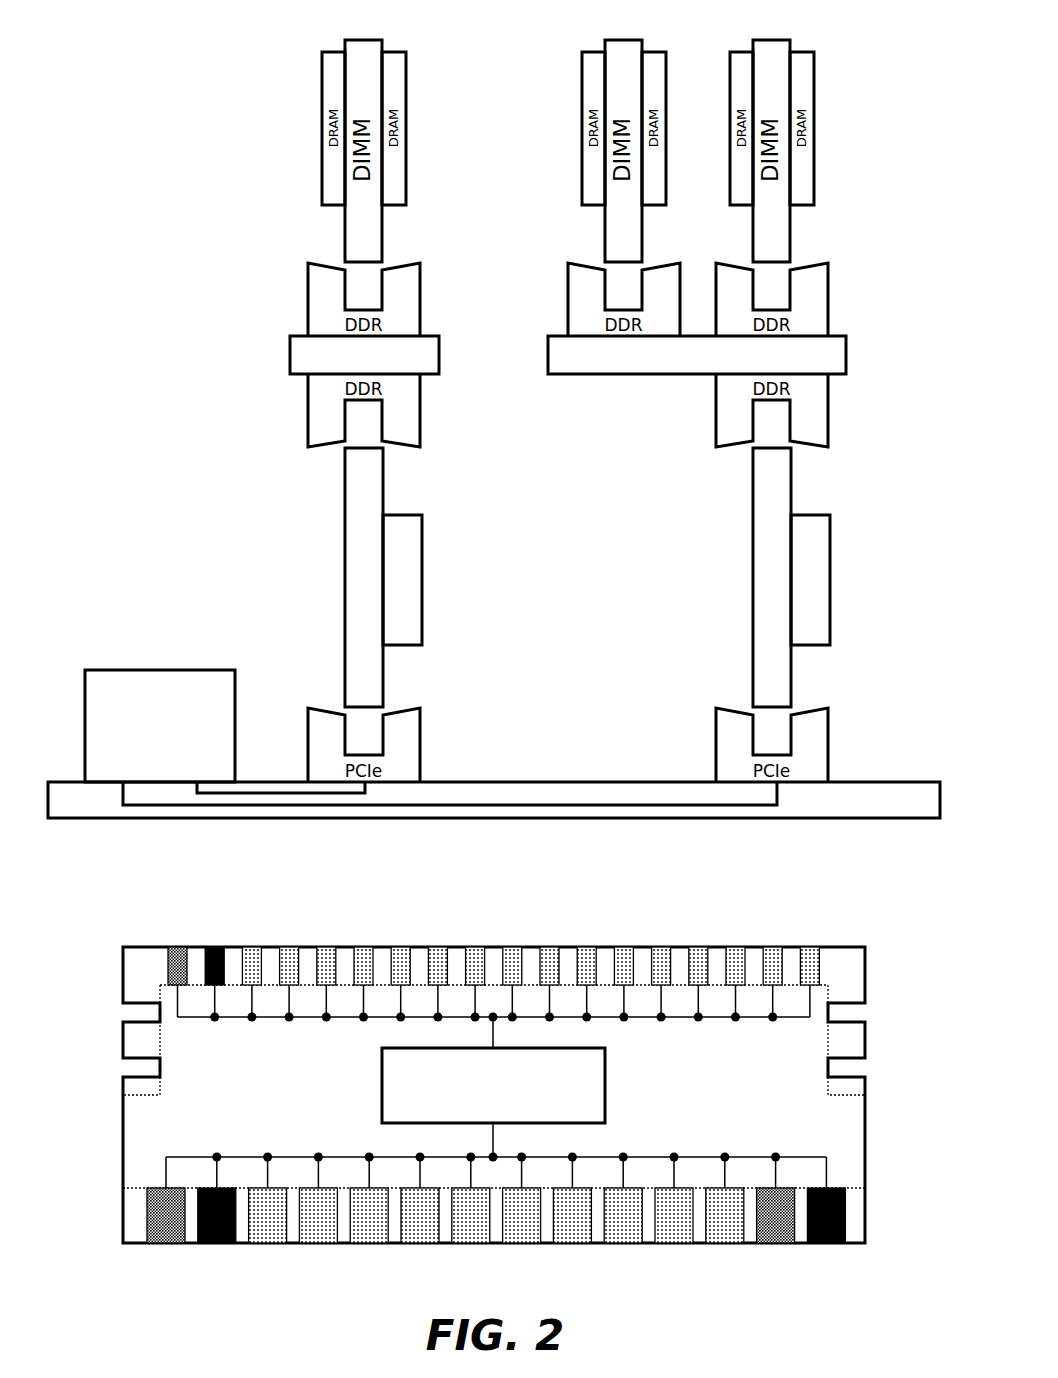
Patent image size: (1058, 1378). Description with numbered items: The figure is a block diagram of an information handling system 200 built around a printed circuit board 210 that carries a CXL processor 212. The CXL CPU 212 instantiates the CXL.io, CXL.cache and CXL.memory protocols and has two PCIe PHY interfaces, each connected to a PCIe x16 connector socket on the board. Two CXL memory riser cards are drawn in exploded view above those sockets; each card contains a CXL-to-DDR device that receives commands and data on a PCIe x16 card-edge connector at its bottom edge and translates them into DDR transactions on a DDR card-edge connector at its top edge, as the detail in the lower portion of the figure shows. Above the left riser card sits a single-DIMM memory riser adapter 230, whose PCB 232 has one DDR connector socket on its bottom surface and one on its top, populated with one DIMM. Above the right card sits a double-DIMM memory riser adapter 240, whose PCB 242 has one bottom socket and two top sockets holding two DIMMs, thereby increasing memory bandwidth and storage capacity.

The information handling system 200 is at (106, 868).
The printed circuit board 210 is at (930, 781).
The CXL processor 212 is at (99, 668).
The single-DIMM memory riser adapter 230 is at (244, 205).
The PCB 232 is at (290, 336).
The double-DIMM memory riser adapter 240 is at (504, 205).
The PCB 242 is at (548, 336).